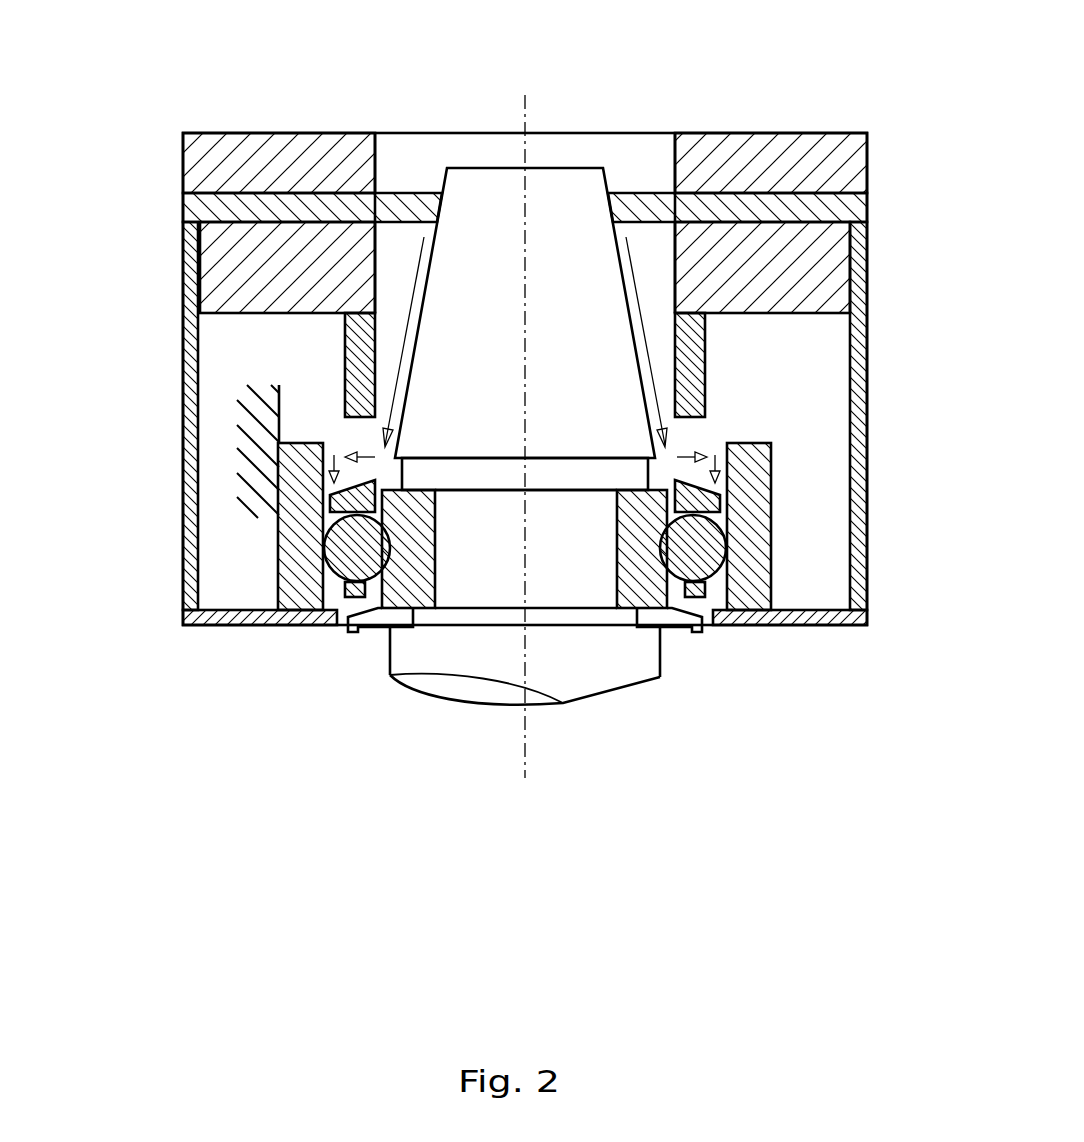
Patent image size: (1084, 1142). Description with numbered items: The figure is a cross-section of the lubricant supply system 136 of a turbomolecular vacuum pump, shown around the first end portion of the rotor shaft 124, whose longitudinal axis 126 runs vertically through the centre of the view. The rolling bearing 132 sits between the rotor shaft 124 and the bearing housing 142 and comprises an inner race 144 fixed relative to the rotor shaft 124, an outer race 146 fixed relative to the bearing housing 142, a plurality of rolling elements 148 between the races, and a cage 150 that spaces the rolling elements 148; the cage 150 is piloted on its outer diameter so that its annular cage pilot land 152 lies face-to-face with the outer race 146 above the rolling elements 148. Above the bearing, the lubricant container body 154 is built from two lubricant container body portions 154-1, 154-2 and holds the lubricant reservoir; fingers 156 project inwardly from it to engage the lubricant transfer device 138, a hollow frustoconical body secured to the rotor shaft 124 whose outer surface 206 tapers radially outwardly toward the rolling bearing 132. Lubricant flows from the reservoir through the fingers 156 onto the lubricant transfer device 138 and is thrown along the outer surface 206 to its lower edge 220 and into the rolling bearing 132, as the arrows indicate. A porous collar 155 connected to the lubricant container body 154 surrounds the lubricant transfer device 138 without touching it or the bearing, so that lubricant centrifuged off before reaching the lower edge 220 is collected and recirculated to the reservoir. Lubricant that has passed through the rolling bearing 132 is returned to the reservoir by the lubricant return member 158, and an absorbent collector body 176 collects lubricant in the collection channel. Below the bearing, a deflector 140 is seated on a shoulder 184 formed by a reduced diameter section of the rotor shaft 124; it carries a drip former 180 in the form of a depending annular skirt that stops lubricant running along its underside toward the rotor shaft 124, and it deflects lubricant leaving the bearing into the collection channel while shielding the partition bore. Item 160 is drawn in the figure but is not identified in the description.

The rotor shaft 124 is at (475, 688).
The longitudinal axis 126 is at (523, 765).
The rolling bearing 132 is at (315, 683).
The lubricant supply system 136 is at (293, 102).
The lubricant transfer device 138 is at (610, 183).
The deflector 140 is at (668, 618).
The bearing housing 142 is at (280, 418).
The inner race 144 is at (623, 610).
The outer race 146 is at (293, 572).
The rolling elements 148 is at (707, 553).
The cage 150 is at (343, 598).
The cage pilot land 152 is at (331, 495).
The lubricant container body 154 is at (456, 173).
The lubricant container body portion 154-1 is at (205, 155).
The lubricant container body portion 154-2 is at (213, 287).
The collar 155 is at (350, 370).
The fingers 156 is at (405, 195).
The lubricant return member 158 is at (190, 483).
The pole plate 160 is at (210, 208).
The absorbent collector body 176 is at (215, 618).
The drip former 180 is at (705, 635).
The shoulder 184 is at (645, 630).
The outer surface 206 is at (538, 215).
The lower edge 220 is at (607, 455).